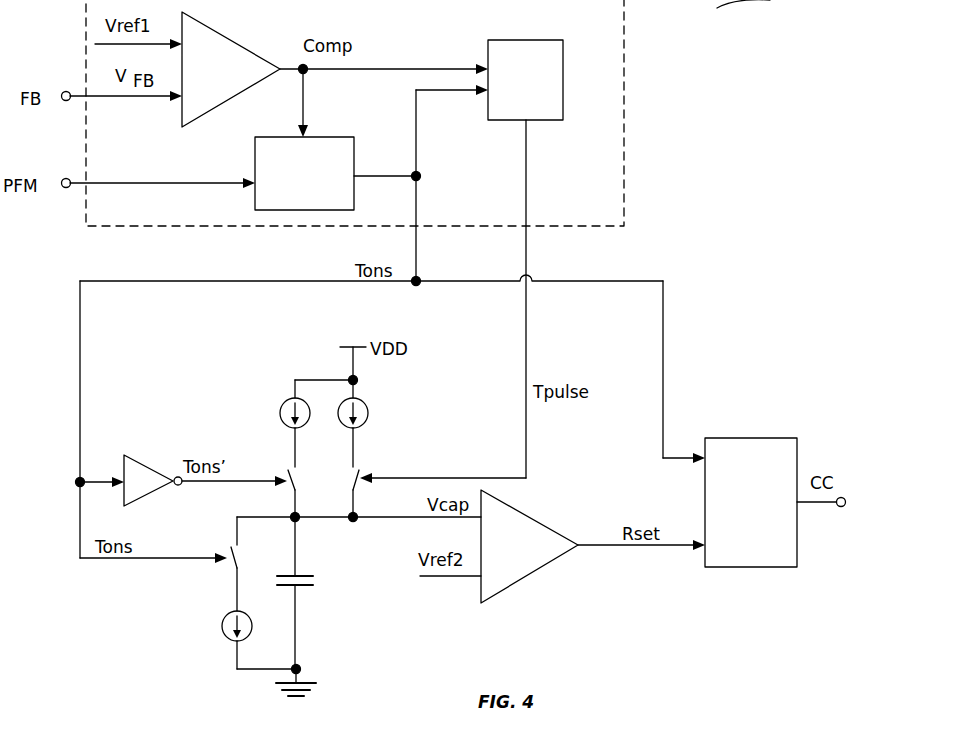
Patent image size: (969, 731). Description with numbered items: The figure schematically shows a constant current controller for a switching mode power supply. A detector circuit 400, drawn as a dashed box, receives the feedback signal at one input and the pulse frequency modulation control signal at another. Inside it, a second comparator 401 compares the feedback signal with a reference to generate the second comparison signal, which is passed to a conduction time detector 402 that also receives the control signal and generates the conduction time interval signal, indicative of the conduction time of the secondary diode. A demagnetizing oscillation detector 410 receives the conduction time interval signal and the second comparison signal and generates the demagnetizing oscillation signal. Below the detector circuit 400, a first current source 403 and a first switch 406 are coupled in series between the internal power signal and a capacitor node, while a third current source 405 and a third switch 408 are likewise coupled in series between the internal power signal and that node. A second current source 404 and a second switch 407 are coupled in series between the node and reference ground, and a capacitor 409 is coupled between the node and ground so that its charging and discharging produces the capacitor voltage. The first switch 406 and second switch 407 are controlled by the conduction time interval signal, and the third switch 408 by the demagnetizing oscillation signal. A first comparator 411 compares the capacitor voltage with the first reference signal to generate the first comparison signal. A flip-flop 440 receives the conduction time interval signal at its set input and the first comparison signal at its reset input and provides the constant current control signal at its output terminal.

The detector circuit 400 is at (627, 135).
The second comparator 401 is at (231, 69).
The conduction time detector 402 is at (304, 173).
The first current source 403 is at (271, 413).
The second current source 404 is at (217, 626).
The third current source 405 is at (375, 413).
The first switch 406 is at (308, 472).
The second switch 407 is at (252, 564).
The third switch 408 is at (375, 472).
The capacitor 409 is at (315, 593).
The demagnetizing oscillation detector 410 is at (525, 80).
The first comparator 411 is at (529, 546).
The flip-flop 440 is at (730, 433).